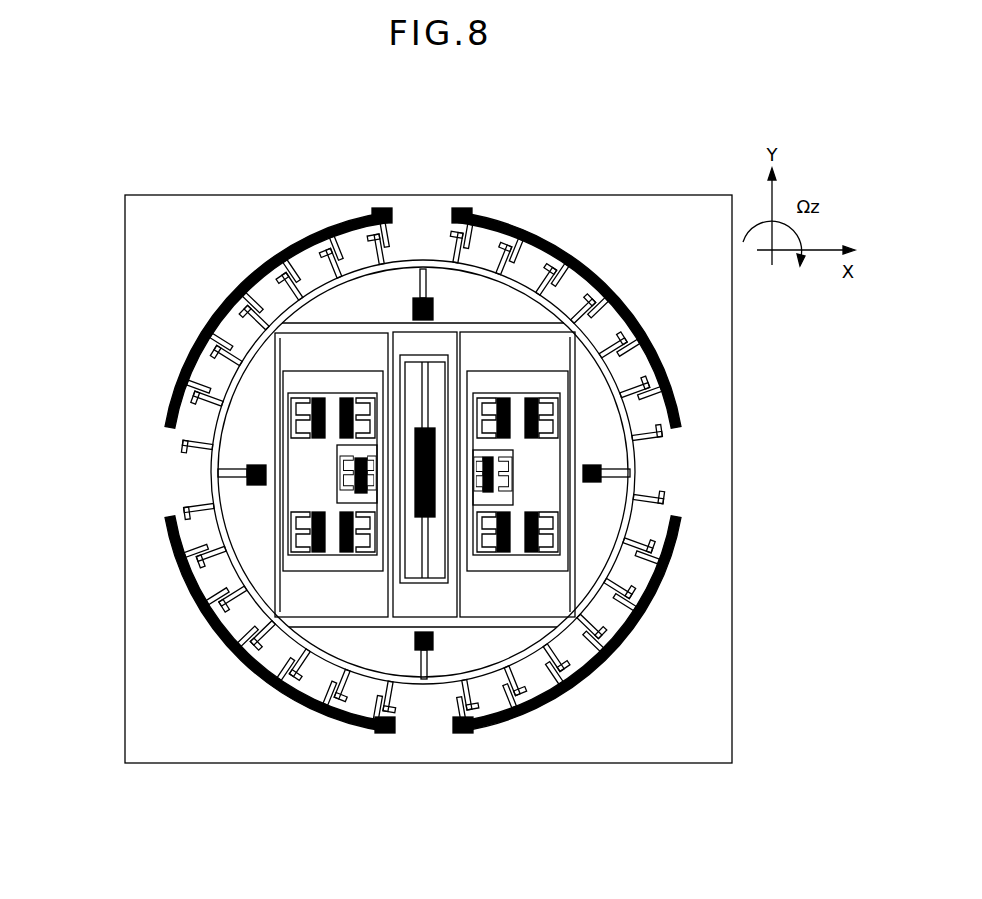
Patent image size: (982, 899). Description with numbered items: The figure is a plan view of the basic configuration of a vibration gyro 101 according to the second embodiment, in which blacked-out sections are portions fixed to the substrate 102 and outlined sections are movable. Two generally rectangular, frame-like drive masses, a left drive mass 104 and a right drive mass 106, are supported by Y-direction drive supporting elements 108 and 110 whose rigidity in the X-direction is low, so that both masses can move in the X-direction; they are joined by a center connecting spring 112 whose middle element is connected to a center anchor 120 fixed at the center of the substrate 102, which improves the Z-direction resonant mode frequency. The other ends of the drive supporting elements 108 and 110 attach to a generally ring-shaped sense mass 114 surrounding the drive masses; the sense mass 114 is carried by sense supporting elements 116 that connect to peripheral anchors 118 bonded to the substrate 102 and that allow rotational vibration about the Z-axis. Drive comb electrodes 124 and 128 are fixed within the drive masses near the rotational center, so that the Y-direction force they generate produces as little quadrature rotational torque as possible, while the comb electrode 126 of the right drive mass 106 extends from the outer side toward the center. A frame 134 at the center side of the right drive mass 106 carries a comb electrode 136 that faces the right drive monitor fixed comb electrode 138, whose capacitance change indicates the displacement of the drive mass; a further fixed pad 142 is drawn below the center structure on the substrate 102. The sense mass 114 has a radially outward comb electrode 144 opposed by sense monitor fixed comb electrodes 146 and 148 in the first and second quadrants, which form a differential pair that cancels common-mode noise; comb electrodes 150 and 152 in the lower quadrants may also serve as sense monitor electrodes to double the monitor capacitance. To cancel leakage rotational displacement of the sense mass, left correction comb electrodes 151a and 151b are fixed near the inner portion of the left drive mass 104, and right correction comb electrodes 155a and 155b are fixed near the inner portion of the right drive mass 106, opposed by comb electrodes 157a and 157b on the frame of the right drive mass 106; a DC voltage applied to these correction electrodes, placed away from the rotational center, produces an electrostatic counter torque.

The vibration gyro 101 is at (157, 172).
The substrate 102 is at (733, 705).
The left drive mass 104 is at (217, 475).
The right drive mass 106 is at (630, 459).
The drive supporting element 108 is at (272, 367).
The drive supporting element 110 is at (412, 407).
The center connecting spring 112 is at (405, 357).
The sense mass 114 is at (316, 298).
The sense supporting element 116 is at (240, 480).
The peripheral anchor 118 is at (602, 462).
The center anchor 120 is at (423, 517).
The left drive fixed comb electrode 124 is at (345, 435).
The comb electrode 126 is at (486, 405).
The right drive fixed comb electrode 128 is at (500, 400).
The frame 134 is at (460, 357).
The comb electrode 136 is at (508, 452).
The right drive monitor fixed comb electrode 138 is at (492, 492).
The electrode pad 142 is at (477, 447).
The comb electrode 144 is at (460, 258).
The sense monitor fixed comb electrode 146 is at (528, 227).
The sense monitor fixed comb electrode 148 is at (248, 268).
The comb electrode 150 is at (263, 677).
The comb electrode 152 is at (605, 688).
The left correction comb electrode 151a is at (310, 437).
The left correction comb electrode 151b is at (307, 530).
The right correction comb electrode 155a is at (533, 418).
The right correction comb electrode 155b is at (640, 490).
The comb electrode 157a is at (538, 397).
The comb electrode 157b is at (540, 528).